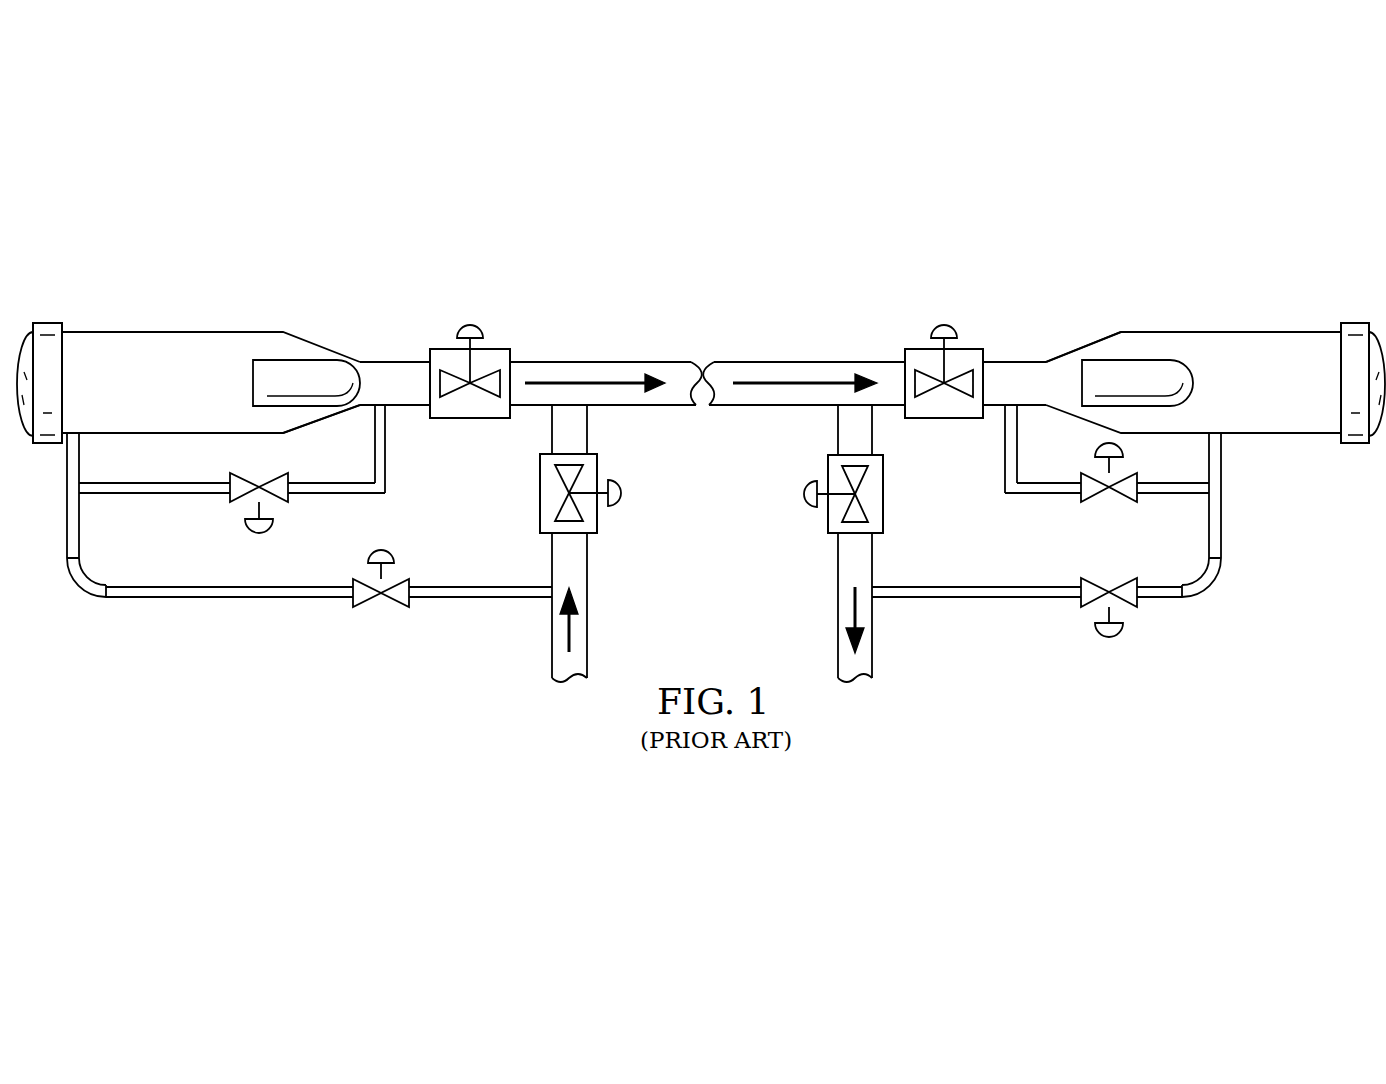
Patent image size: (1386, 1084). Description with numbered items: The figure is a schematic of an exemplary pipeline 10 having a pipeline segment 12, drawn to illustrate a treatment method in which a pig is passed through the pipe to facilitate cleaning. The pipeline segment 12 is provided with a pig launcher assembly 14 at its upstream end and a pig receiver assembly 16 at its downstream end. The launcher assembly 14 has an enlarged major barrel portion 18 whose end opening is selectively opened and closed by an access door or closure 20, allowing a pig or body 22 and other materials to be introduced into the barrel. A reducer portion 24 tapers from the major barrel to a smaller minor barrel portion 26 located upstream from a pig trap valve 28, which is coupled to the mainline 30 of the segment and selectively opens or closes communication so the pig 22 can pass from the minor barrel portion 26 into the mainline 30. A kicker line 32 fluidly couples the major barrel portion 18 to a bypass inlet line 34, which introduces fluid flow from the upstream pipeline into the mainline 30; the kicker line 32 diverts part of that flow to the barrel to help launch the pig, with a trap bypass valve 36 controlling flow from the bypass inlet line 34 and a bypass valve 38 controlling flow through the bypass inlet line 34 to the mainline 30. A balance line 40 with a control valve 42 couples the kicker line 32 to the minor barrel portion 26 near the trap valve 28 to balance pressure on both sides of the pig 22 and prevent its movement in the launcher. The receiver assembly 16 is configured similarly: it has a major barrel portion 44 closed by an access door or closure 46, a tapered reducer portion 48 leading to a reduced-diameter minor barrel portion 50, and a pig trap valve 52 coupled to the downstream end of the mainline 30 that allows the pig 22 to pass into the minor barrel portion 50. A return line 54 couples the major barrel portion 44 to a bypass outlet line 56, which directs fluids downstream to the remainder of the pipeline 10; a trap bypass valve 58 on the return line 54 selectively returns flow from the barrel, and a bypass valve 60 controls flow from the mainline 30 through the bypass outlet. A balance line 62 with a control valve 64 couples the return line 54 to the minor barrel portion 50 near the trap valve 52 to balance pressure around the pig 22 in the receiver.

The pipeline 10 is at (993, 305).
The pipeline segment 12 is at (810, 357).
The pig launcher assembly 14 is at (188, 386).
The pig receiver assembly 16 is at (1216, 383).
The major barrel portion 18 is at (186, 332).
The access door or closure 20 is at (45, 448).
The pig 22 is at (273, 365).
The reducer portion 24 is at (318, 421).
The minor barrel portion 26 is at (390, 364).
The pig trap valve 28 is at (463, 326).
The mainline 30 is at (600, 361).
The kicker line 32 is at (480, 598).
The bypass inlet line 34 is at (588, 607).
The trap bypass valve 36 is at (377, 550).
The bypass valve 38 is at (611, 505).
The balance line 40 is at (155, 495).
The control valve 42 is at (253, 532).
The major barrel portion 44 is at (1228, 332).
The access door or closure 46 is at (1348, 448).
The tapered reducer portion 48 is at (1098, 340).
The minor barrel portion 50 is at (1013, 367).
The pig trap valve 52 is at (936, 327).
The return line 54 is at (977, 600).
The bypass outlet line 56 is at (838, 608).
The trap bypass valve 58 is at (1114, 638).
The bypass valve 60 is at (810, 506).
The balance line 62 is at (1043, 497).
The control valve 64 is at (1097, 445).